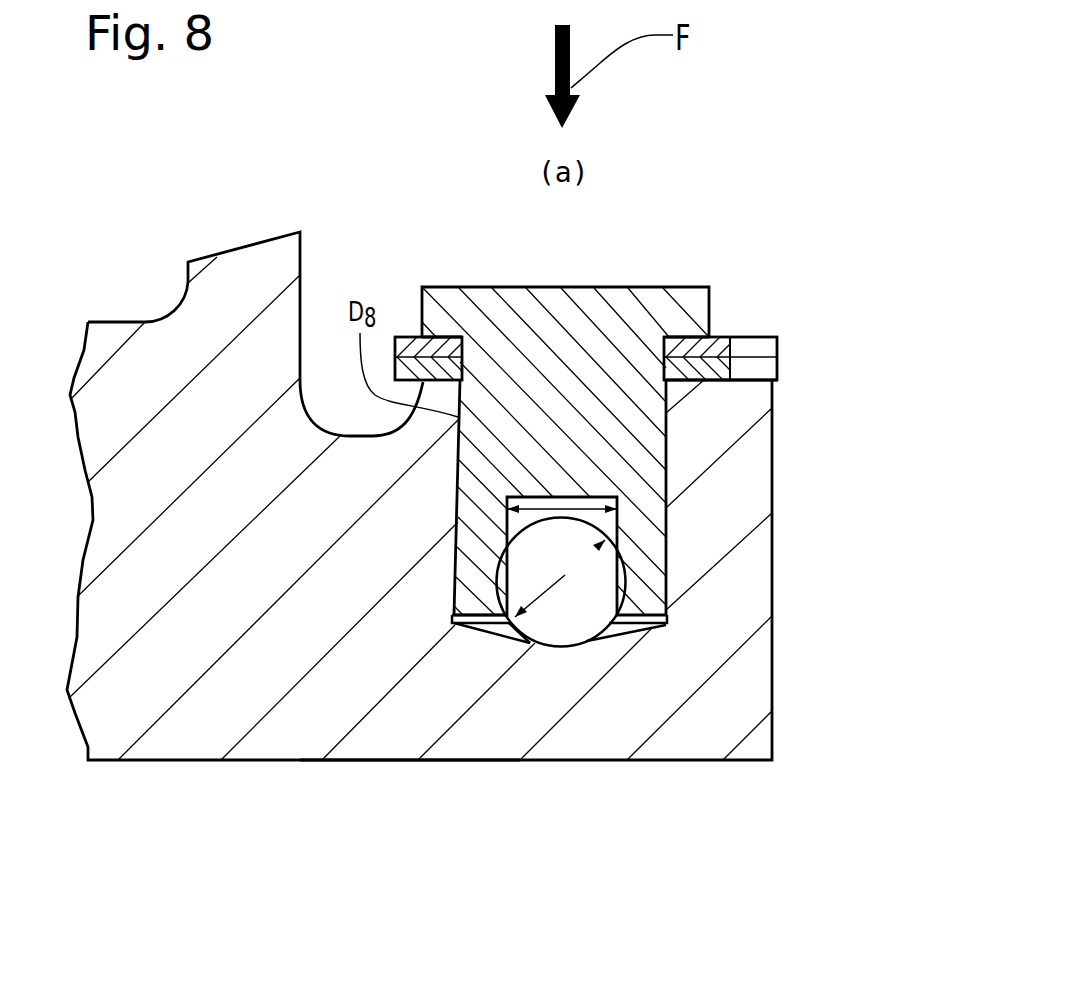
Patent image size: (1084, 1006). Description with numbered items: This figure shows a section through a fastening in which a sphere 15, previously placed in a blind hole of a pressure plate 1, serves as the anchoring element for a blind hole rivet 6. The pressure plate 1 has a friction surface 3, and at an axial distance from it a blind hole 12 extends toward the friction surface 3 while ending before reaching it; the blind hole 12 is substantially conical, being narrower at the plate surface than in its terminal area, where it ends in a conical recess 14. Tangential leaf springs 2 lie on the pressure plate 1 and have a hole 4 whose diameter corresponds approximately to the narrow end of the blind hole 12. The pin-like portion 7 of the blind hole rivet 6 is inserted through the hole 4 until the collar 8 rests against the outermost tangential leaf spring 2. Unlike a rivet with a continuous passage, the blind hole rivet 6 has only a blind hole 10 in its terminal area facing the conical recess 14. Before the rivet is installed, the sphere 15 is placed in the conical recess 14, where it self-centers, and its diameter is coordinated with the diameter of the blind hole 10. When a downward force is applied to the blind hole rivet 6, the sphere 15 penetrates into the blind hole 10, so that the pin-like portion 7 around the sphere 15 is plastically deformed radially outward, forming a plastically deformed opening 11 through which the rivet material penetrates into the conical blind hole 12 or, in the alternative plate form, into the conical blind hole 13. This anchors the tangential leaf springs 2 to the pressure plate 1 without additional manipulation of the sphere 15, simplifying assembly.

The pressure plate 1 is at (757, 673).
The tangential leaf springs 2 is at (768, 330).
The friction surface 3 is at (410, 765).
The hole 4 is at (677, 390).
The blind hole rivet 6 is at (675, 277).
The pin-like portion 7 is at (470, 492).
The collar 8 is at (700, 310).
The blind hole 10 is at (618, 522).
The plastically deformed opening 11 is at (613, 603).
The blind hole 12 is at (453, 580).
The conical blind hole 13 is at (429, 766).
The conical recess 14 is at (502, 626).
The sphere 15 is at (528, 630).